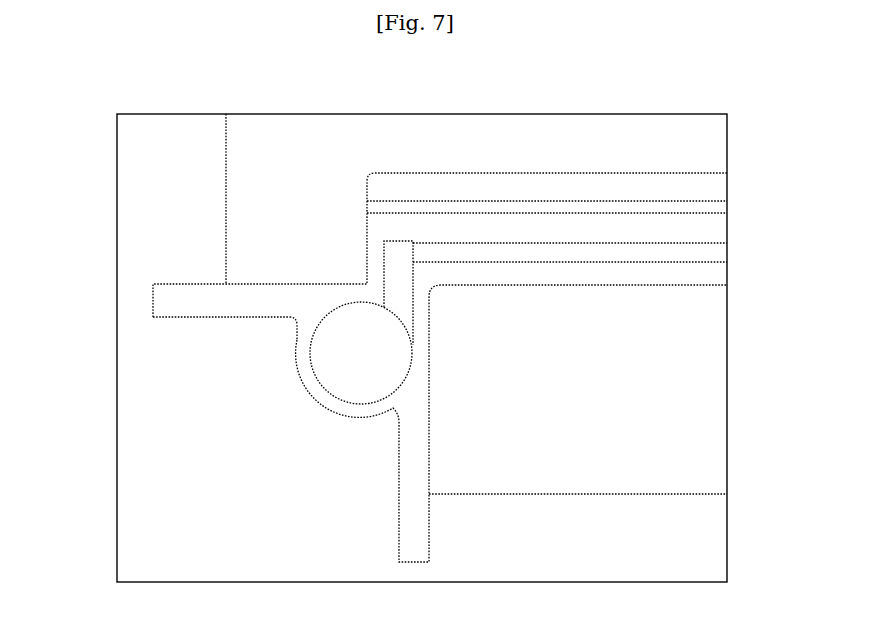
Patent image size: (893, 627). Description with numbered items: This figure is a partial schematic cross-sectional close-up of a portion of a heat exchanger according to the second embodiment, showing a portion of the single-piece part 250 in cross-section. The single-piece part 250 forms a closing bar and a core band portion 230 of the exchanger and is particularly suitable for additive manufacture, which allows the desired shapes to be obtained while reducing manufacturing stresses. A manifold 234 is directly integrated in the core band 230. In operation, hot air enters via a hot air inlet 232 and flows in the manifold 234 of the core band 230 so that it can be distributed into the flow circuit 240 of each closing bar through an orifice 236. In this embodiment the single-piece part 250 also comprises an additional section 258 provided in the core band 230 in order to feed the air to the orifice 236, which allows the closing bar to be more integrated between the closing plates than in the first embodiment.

The core band portion 230 is at (220, 308).
The hot air inlet 232 is at (362, 327).
The manifold portion 234 is at (297, 334).
The orifice 236 is at (416, 254).
The flow circuit 240 is at (678, 256).
The single-piece part 250 is at (418, 513).
The additional section 258 is at (398, 295).